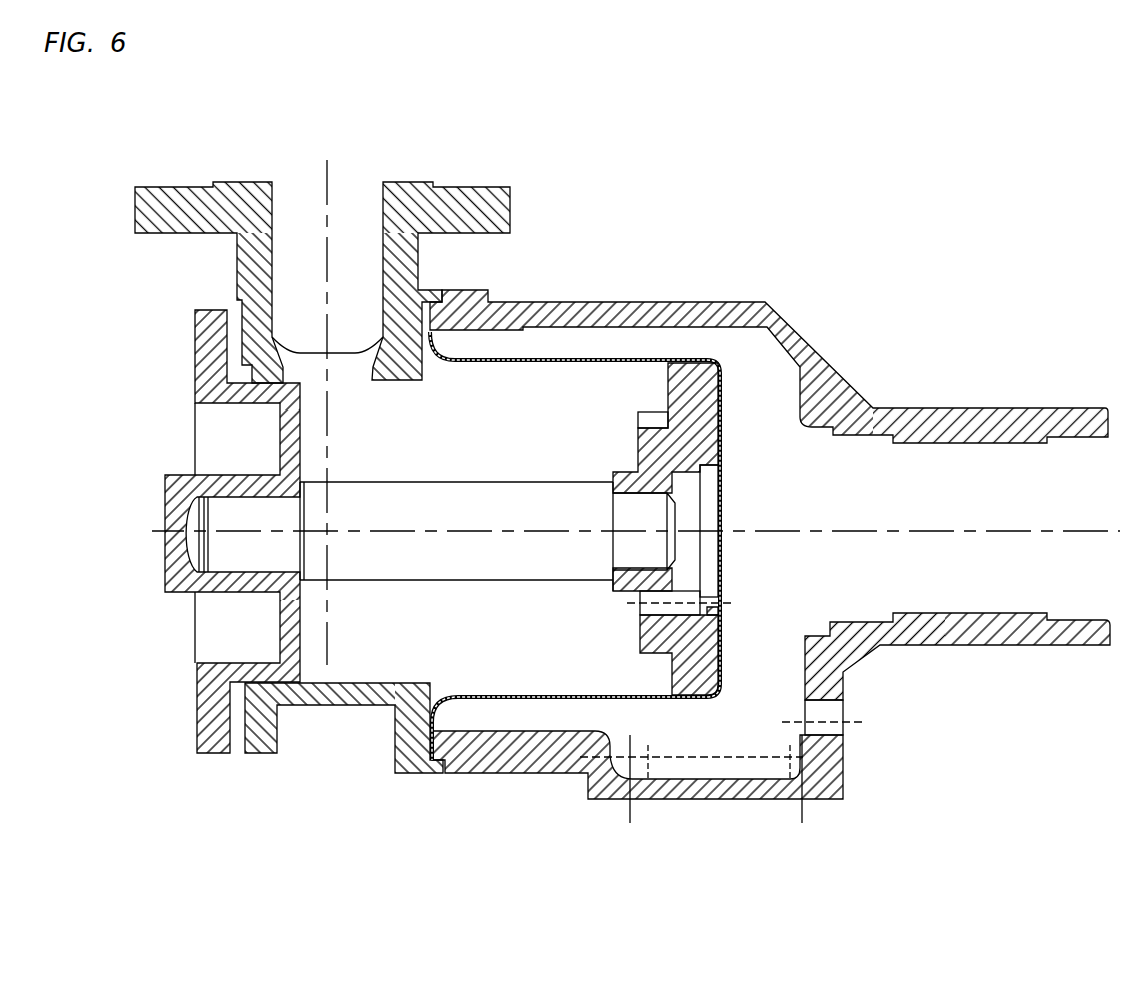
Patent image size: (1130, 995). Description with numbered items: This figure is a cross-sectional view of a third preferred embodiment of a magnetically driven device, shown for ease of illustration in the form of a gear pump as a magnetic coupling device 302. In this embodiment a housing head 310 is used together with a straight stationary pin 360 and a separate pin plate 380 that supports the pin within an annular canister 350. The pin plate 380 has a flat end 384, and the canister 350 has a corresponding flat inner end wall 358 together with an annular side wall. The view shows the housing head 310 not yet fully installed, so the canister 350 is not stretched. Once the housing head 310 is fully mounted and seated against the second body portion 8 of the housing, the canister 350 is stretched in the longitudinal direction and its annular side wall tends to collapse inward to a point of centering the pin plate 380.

The magnetic coupling device 302 is at (748, 237).
The housing head 310 is at (208, 752).
The second body portion 8 is at (353, 702).
The canister 350 is at (538, 703).
The straight pin 360 is at (482, 553).
The pin plate 380 is at (693, 680).
The flat end 384 is at (731, 641).
The flat inner end wall 358 is at (712, 483).